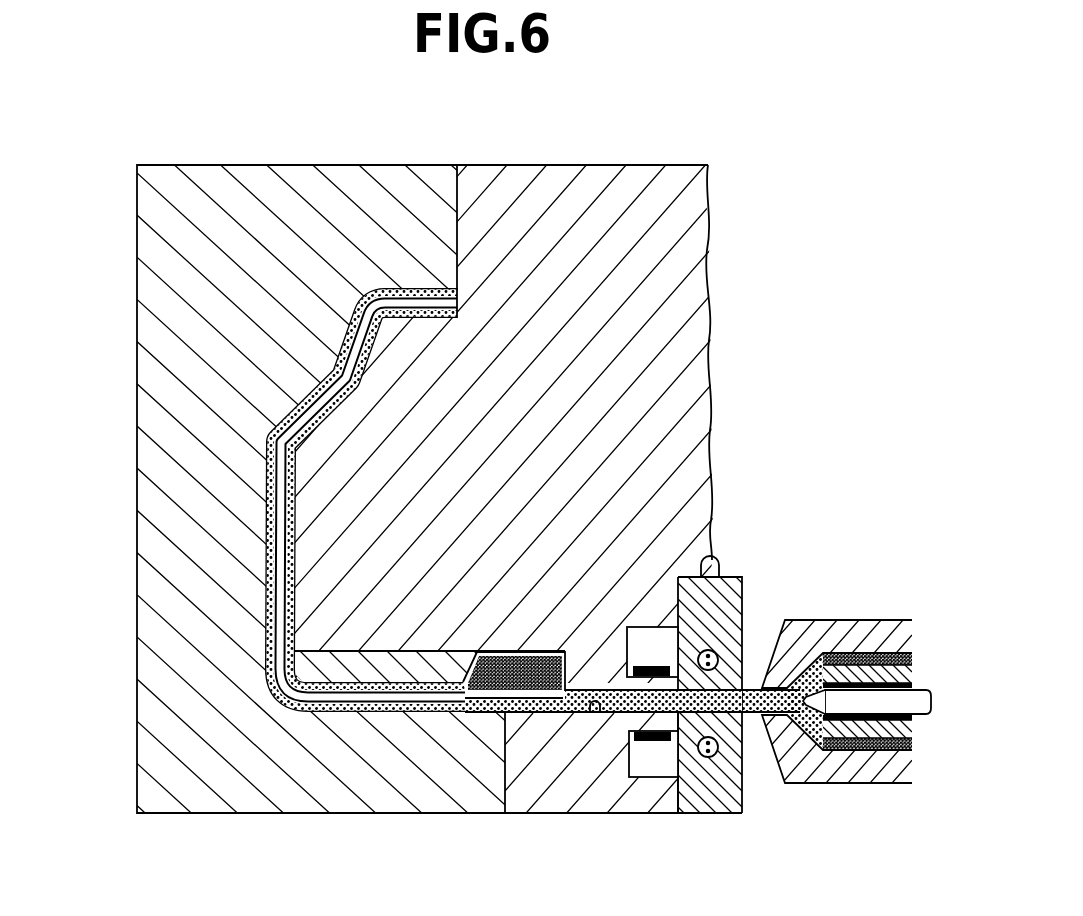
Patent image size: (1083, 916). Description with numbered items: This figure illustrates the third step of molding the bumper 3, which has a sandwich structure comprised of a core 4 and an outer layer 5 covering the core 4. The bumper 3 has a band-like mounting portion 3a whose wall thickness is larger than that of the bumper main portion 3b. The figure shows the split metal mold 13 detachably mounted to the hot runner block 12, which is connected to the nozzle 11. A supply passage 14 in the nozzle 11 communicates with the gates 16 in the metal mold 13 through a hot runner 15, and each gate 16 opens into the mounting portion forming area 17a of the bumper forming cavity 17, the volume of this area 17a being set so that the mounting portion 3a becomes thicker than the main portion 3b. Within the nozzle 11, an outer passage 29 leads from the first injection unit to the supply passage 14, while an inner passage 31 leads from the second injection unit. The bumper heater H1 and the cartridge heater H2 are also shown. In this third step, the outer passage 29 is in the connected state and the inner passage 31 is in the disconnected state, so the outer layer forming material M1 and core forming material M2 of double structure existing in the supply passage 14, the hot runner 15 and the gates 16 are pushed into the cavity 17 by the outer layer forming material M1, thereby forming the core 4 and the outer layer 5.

The bumper 3 is at (248, 459).
The mounting portion 3a is at (543, 713).
The bumper main portion 3b is at (268, 622).
The core 4 is at (278, 545).
The outer layer 5 is at (305, 412).
The nozzle 11 is at (834, 625).
The hot runner block 12 is at (710, 559).
The metal mold 13 is at (726, 235).
The supply passage 14 is at (755, 695).
The hot runner 15 is at (690, 720).
The gate 16 is at (584, 713).
The bumper forming cavity 17 is at (268, 422).
The mounting portion forming area 17a is at (522, 660).
The outer passage 29 is at (875, 656).
The inner passage 31 is at (868, 716).
The bumper heater H1 is at (652, 740).
The cartridge heater H2 is at (717, 755).
The outer layer forming material M1 is at (770, 795).
The core forming material M2 is at (266, 501).